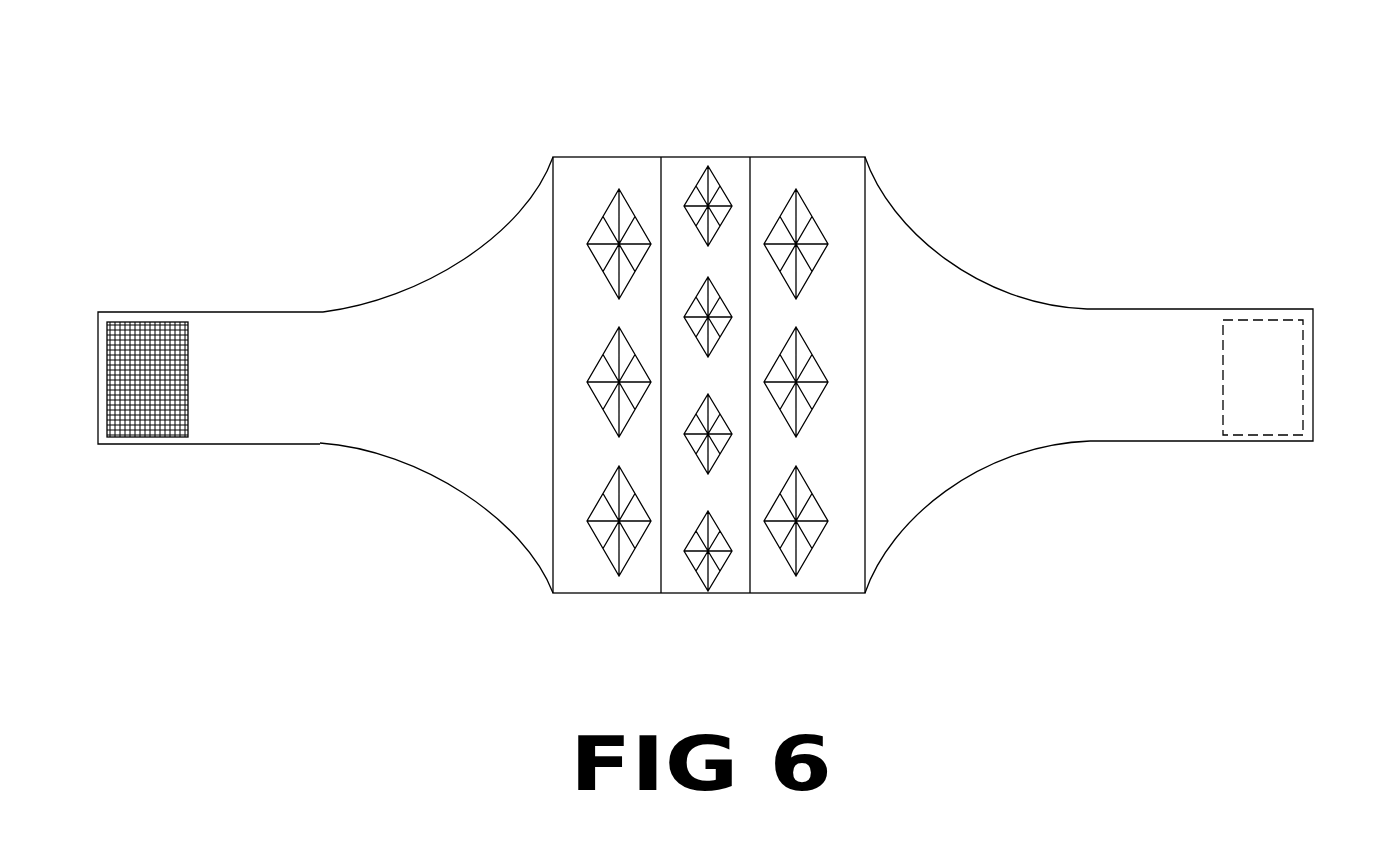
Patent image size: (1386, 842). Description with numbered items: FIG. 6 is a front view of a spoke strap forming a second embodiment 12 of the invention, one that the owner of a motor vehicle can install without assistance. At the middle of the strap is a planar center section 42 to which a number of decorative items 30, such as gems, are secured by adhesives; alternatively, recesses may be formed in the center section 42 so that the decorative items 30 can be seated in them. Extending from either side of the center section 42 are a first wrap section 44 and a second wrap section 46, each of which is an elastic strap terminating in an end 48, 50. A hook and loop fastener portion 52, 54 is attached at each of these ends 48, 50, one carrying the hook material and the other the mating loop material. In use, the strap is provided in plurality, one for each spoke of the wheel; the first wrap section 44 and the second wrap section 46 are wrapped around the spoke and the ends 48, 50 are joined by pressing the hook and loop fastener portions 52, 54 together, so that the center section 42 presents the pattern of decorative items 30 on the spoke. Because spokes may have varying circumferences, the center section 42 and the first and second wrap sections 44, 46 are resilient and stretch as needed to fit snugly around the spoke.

The second embodiment 12 is at (715, 364).
The decorative items 30 is at (813, 353).
The center section 42 is at (796, 364).
The first wrap section 44 is at (500, 449).
The second wrap section 46 is at (972, 443).
The end 48 is at (186, 339).
The end 50 is at (1233, 341).
The hook and loop fastener portion 52 is at (142, 317).
The hook and loop fastener portion 54 is at (1240, 317).